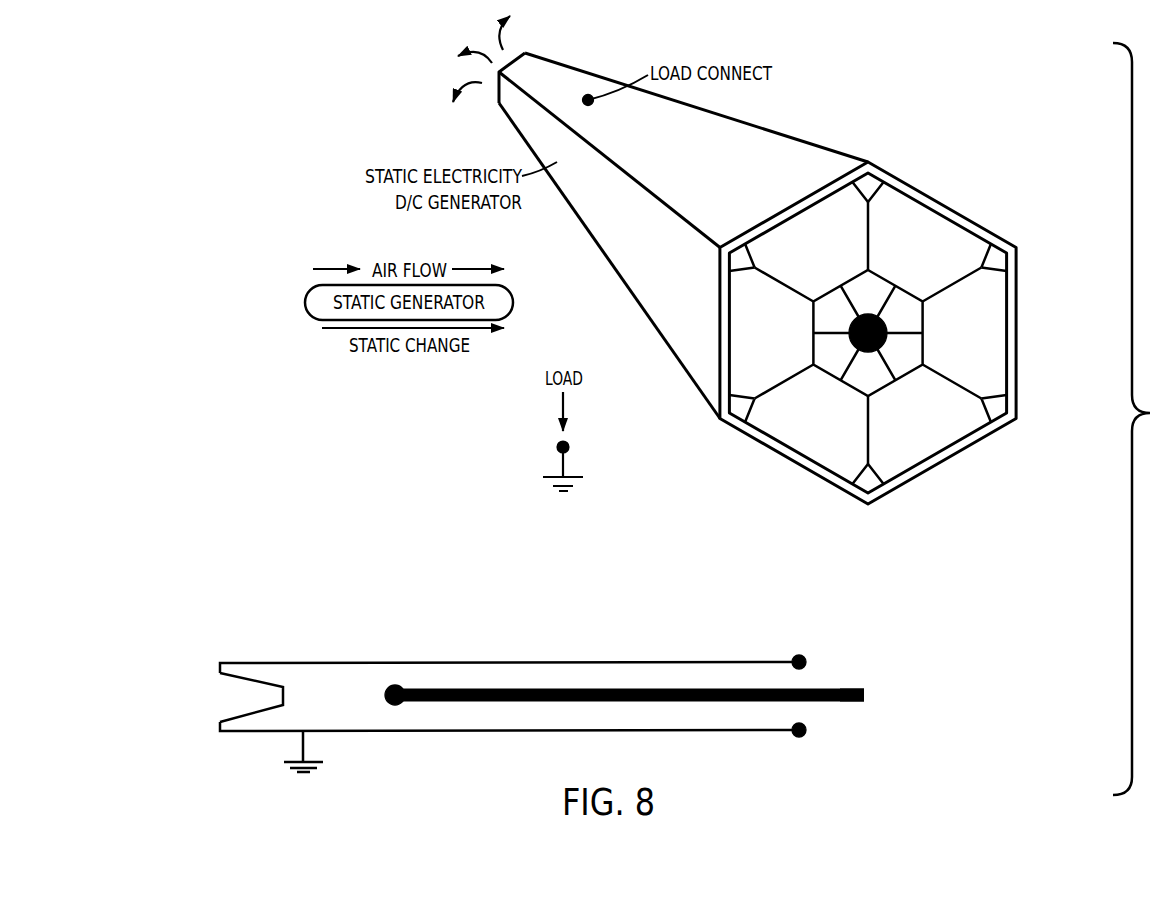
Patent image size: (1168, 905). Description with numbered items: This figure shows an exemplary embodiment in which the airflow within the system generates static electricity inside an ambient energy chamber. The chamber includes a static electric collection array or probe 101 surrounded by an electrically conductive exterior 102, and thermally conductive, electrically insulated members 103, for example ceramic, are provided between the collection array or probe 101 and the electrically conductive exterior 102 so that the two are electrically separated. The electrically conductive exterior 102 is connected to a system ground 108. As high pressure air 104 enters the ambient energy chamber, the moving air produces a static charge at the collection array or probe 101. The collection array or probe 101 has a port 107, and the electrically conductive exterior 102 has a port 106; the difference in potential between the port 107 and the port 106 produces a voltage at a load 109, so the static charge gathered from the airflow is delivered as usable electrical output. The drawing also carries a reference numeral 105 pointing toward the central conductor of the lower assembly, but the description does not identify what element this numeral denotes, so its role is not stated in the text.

The static electric collection array or probe 101 is at (904, 272).
The electrically conductive exterior 102 is at (1034, 282).
The thermally conductive, electrically insulated members 103 is at (955, 303).
The high pressure air 104 is at (830, 386).
The central rod 105 is at (731, 705).
The port of the electrically conductive exterior 106 is at (823, 661).
The port of the collection array or probe 107 is at (878, 696).
The system ground 108 is at (321, 745).
The load 109 is at (923, 631).